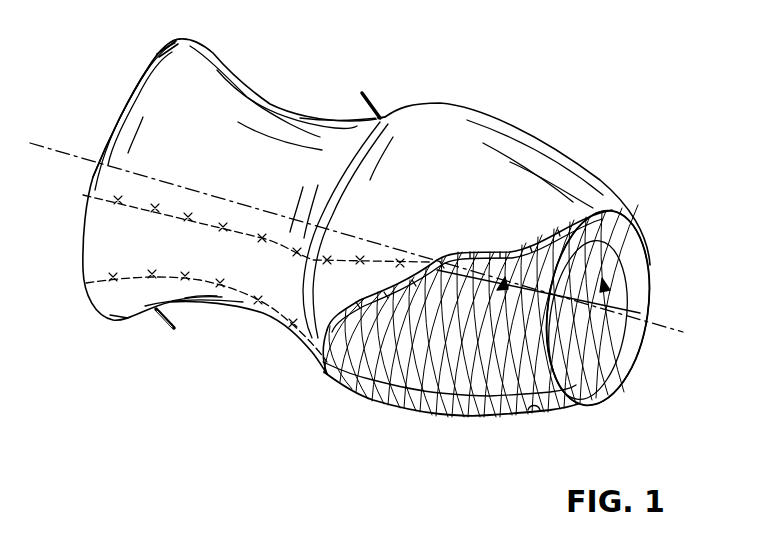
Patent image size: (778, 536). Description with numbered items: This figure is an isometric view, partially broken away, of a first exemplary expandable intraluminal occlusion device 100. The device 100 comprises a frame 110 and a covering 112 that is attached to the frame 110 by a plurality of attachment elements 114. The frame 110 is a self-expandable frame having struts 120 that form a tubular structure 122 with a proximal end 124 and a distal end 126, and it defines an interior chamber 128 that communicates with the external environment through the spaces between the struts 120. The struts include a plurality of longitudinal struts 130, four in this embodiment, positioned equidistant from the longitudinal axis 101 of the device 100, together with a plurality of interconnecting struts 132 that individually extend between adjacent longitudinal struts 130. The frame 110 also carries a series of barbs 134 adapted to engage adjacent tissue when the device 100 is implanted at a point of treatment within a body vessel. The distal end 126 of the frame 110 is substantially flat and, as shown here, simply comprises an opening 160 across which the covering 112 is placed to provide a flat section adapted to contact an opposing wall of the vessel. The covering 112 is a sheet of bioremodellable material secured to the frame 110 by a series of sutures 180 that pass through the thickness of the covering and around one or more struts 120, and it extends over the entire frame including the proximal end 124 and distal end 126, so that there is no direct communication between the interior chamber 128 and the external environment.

The intraluminal occlusion device 100 is at (652, 115).
The longitudinal axis 101 is at (60, 150).
The frame 110 is at (480, 410).
The covering 112 is at (456, 212).
The attachment elements 114 is at (188, 215).
The struts 120 is at (335, 366).
The tubular structure 122 is at (660, 240).
The proximal end 124 is at (98, 34).
The distal end 126 is at (646, 338).
The interior chamber 128 is at (640, 313).
The longitudinal struts 130 is at (415, 397).
The interconnecting struts 132 is at (535, 410).
The barbs 134 is at (374, 106).
The opening 160 is at (633, 272).
The sutures 180 is at (126, 278).